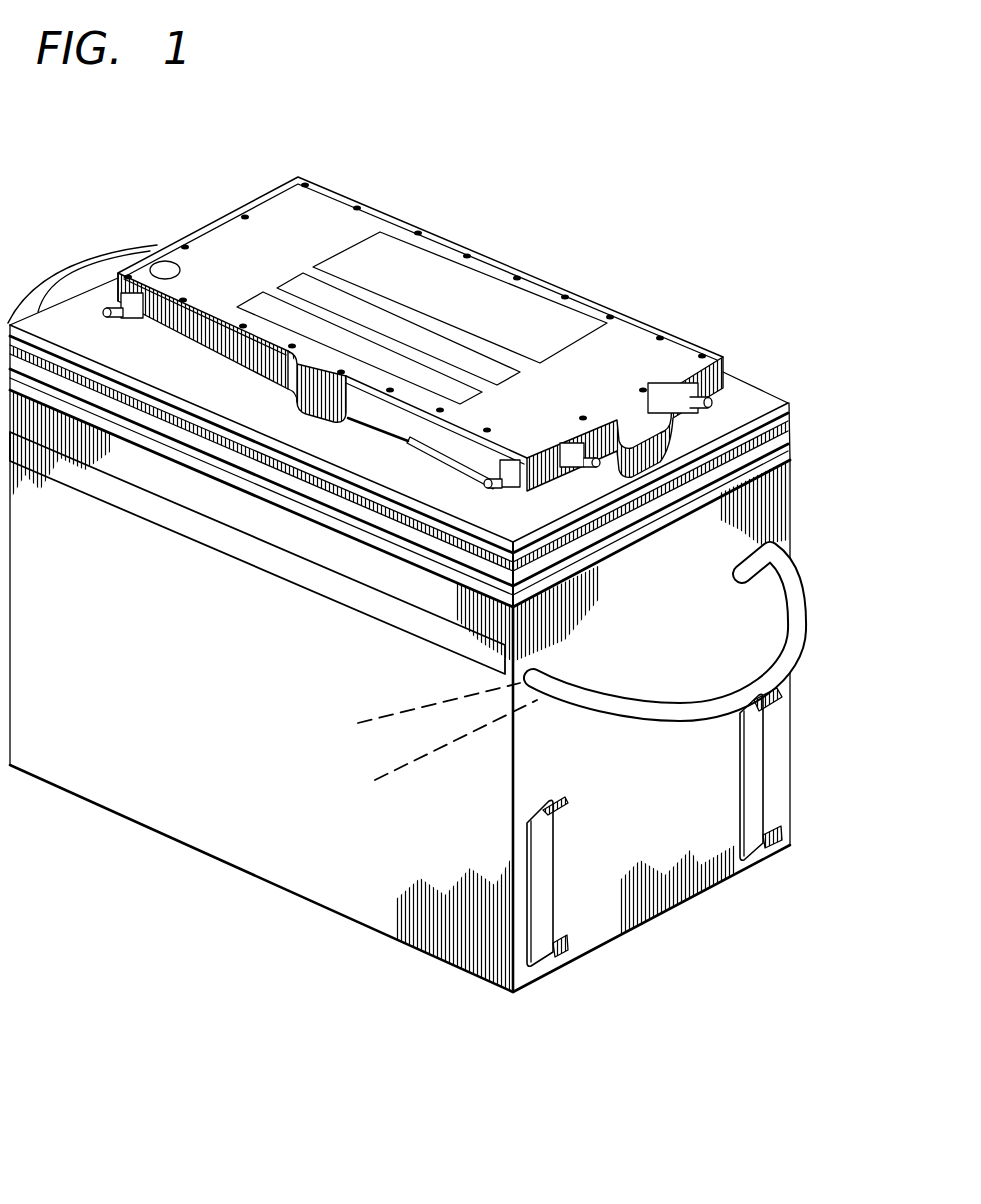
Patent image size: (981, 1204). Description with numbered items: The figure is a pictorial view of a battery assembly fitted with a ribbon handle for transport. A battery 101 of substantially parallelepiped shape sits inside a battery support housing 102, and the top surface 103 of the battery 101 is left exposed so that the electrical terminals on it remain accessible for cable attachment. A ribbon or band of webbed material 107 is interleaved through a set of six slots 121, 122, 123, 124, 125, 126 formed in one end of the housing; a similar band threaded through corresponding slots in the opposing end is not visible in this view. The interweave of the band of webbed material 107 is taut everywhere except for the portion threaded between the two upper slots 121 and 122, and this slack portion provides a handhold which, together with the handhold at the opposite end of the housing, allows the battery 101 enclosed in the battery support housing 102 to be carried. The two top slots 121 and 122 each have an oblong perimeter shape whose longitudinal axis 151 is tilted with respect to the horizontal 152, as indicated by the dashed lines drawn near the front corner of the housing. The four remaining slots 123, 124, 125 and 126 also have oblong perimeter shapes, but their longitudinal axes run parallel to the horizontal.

The battery 101 is at (785, 438).
The battery support housing 102 is at (706, 822).
The top surface 103 is at (572, 386).
The ribbon or band of webbed material 107 is at (722, 697).
The slot 121 is at (578, 668).
The slot 122 is at (745, 570).
The slot 123 is at (560, 806).
The slot 124 is at (780, 698).
The slot 125 is at (563, 950).
The slot 126 is at (783, 839).
The longitudinal axis 151 is at (376, 716).
The horizontal 152 is at (412, 765).